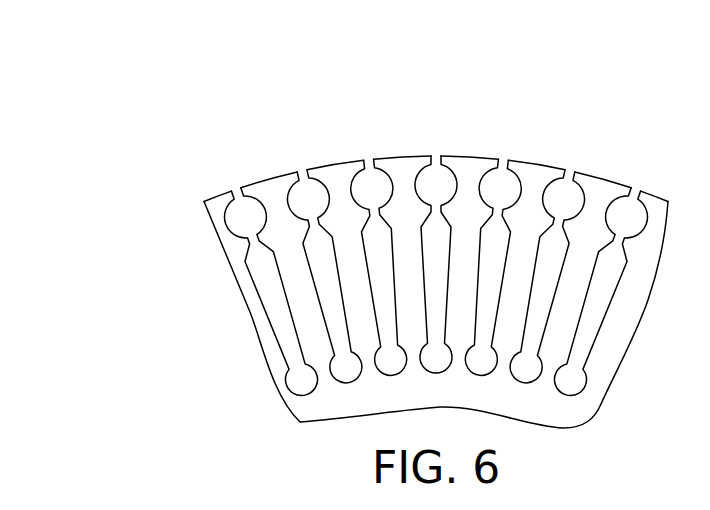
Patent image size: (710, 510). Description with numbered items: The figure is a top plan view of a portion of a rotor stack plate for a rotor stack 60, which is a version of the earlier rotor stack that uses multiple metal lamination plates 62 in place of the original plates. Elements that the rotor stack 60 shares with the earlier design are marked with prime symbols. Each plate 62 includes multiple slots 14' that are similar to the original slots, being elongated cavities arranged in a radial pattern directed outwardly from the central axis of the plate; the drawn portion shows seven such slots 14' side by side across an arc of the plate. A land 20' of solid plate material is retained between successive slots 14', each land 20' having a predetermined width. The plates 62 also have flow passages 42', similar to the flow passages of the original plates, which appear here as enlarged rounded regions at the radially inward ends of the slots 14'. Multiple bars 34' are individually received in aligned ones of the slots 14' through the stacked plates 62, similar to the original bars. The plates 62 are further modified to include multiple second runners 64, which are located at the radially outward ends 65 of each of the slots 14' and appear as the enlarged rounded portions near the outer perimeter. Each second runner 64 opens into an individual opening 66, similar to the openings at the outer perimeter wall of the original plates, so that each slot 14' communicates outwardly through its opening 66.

The rotor stack 60 is at (607, 112).
The slot 14' is at (436, 279).
The land 20' is at (436, 146).
The opening 66 is at (433, 157).
The flow passage 42' is at (293, 303).
The second runner 64 is at (365, 183).
The bar 34' is at (463, 249).
The radially outward end 65 is at (570, 225).
The metal lamination plate 62 is at (600, 195).